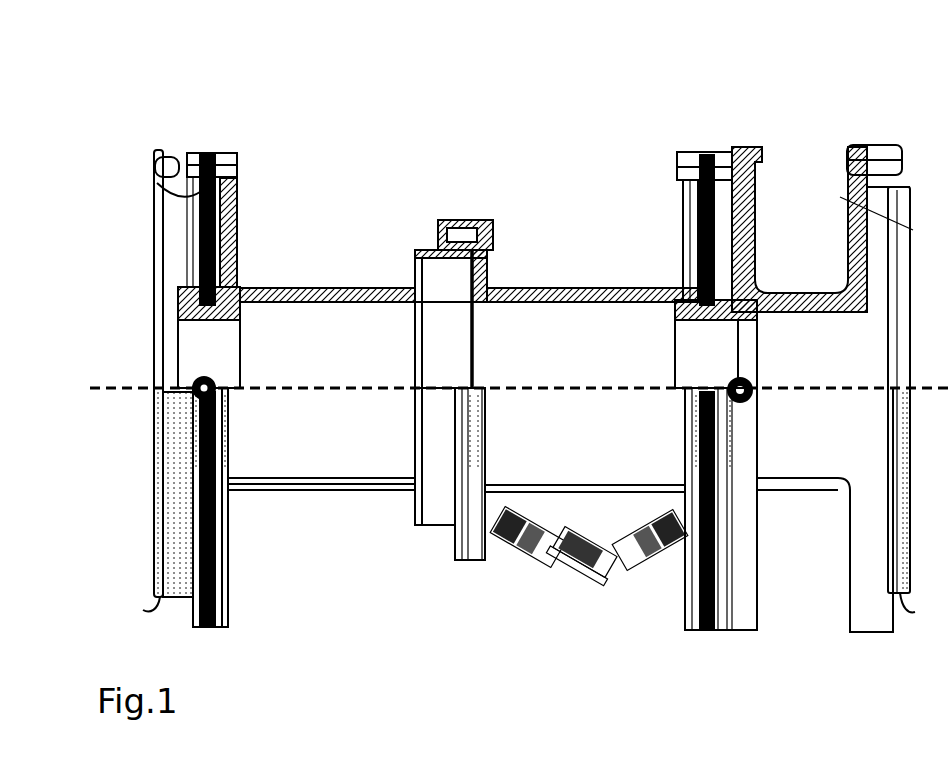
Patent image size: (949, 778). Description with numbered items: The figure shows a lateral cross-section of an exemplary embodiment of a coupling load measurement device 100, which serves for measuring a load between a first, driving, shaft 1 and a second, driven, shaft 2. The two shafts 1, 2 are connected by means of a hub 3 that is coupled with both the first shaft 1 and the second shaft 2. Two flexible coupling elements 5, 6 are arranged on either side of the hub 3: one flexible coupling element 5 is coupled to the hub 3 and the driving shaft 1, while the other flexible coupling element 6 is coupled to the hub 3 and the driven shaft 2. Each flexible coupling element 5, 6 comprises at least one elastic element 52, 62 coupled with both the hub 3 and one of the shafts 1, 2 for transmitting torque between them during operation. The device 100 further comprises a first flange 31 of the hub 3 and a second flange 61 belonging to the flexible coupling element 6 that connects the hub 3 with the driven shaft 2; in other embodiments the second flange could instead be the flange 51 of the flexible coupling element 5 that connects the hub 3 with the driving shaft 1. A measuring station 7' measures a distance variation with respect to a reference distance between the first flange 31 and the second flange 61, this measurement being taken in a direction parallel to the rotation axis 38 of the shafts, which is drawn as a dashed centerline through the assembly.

The coupling load measurement device 100 is at (515, 153).
The first shaft 1 is at (180, 590).
The second shaft 2 is at (857, 560).
The hub 3 is at (337, 498).
The flexible coupling element 5 is at (222, 632).
The flexible coupling element 6 is at (700, 627).
The measuring station 7' is at (589, 610).
The first flange 31 is at (487, 258).
The rotation axis 38 is at (403, 392).
The flange 51 is at (230, 230).
The elastic element 52 is at (200, 256).
The second flange 61 is at (690, 223).
The elastic element 62 is at (718, 215).